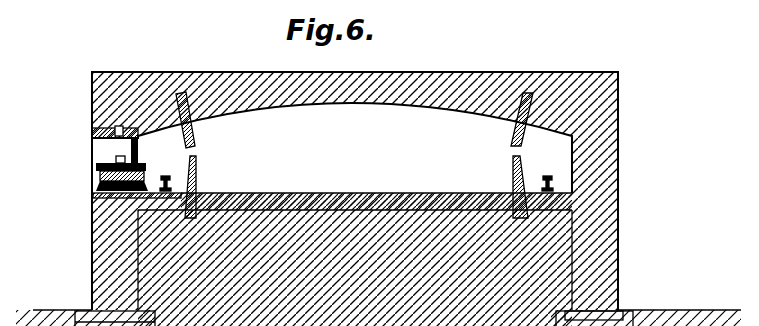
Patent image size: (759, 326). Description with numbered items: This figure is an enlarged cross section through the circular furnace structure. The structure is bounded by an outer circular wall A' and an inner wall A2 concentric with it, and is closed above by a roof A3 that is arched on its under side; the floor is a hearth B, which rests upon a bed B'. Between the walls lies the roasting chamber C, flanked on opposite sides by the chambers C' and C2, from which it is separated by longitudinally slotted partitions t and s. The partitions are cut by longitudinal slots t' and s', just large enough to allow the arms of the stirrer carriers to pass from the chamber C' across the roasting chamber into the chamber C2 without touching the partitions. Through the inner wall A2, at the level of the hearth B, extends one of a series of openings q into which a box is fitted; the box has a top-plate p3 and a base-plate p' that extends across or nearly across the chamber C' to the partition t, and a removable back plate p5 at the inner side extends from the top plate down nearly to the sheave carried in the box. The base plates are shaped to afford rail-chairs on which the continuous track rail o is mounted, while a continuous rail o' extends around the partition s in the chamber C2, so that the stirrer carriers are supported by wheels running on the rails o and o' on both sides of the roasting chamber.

The roof A3 is at (410, 72).
The inner wall A2 is at (88, 223).
The outer circular wall A' is at (619, 191).
The hearth B is at (355, 219).
The bed B' is at (355, 268).
The roasting chamber C is at (383, 150).
The chamber C' is at (140, 165).
The chamber C2 is at (550, 164).
The top-plate p3 is at (84, 126).
The base-plate p' is at (112, 200).
The removable back plate p5 is at (123, 138).
The opening q is at (90, 145).
The partition t is at (180, 130).
The slot t' is at (214, 177).
The partition s is at (525, 130).
The slot s' is at (498, 182).
The track rail o is at (196, 178).
The rail o' is at (517, 178).